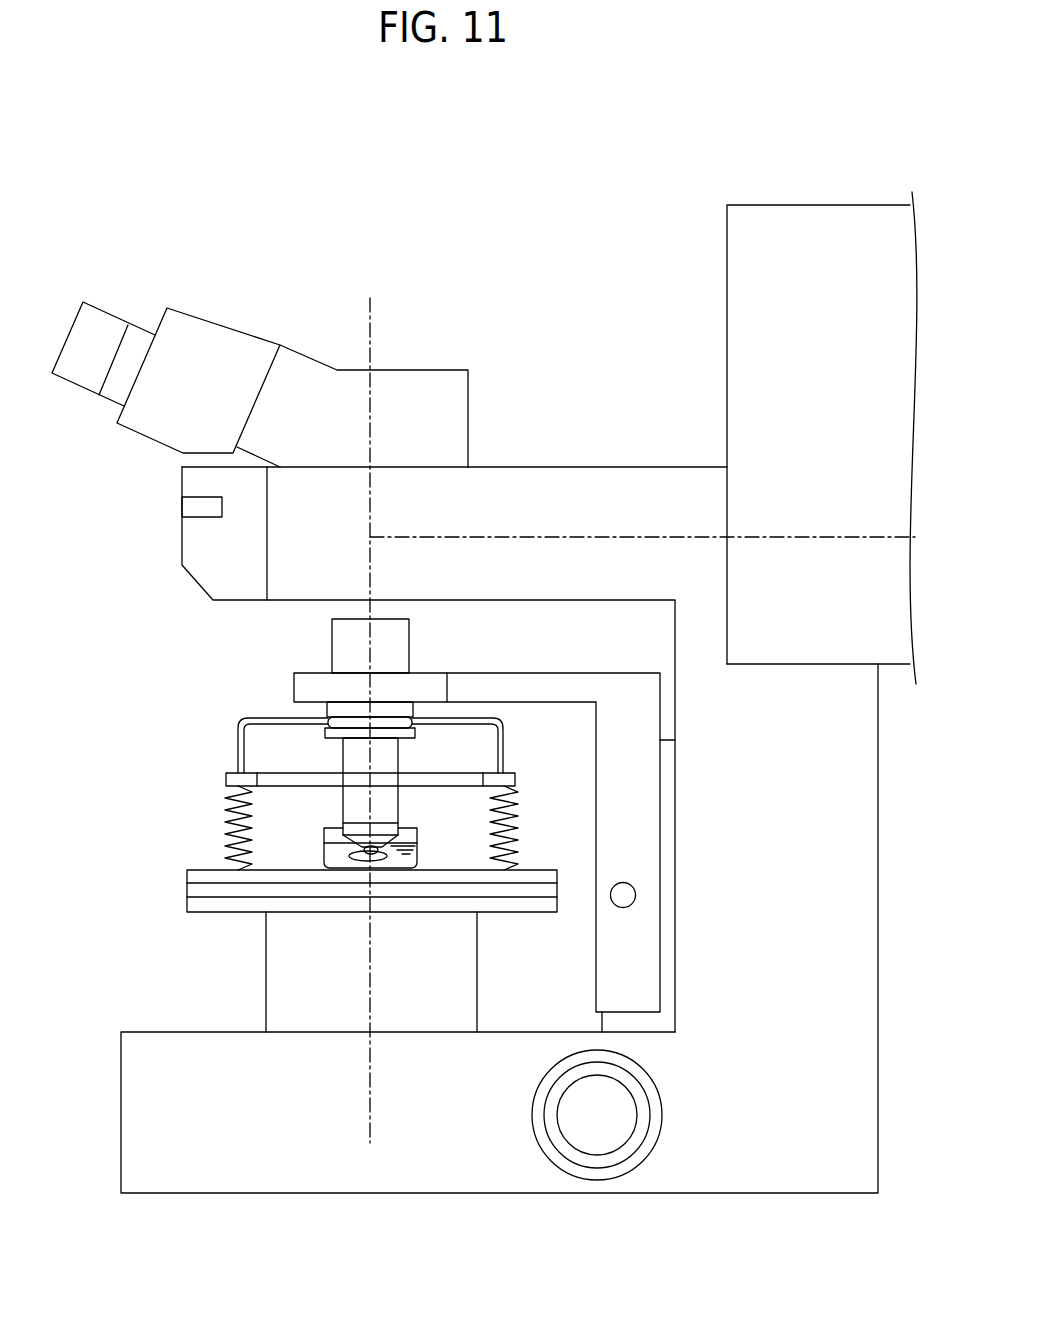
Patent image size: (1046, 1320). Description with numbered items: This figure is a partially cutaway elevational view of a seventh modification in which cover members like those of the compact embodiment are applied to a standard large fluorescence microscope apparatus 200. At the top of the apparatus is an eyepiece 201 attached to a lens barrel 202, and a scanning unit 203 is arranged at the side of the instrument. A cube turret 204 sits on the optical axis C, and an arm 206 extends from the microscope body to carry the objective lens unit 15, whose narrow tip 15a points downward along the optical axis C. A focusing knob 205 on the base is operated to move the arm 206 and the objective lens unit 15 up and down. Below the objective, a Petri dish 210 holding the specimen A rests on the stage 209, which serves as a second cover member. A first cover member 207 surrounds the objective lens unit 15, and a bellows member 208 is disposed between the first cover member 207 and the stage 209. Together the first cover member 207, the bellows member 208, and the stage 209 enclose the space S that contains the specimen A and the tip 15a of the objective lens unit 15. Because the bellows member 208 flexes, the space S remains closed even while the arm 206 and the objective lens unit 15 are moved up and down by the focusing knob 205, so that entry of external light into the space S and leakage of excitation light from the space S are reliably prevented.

The fluorescence microscope apparatus 200 is at (318, 256).
The eyepiece 201 is at (107, 323).
The lens barrel 202 is at (303, 363).
The scanning unit 203 is at (727, 296).
The cube turret 204 is at (200, 575).
The focusing knob 205 is at (664, 1093).
The arm 206 is at (492, 682).
The first cover member 207 is at (238, 752).
The bellows member 208 is at (228, 817).
The stage 209 is at (190, 880).
The Petri dish 210 is at (418, 857).
The objective lens unit 15 is at (353, 761).
The tip of the objective lens unit 15a is at (375, 858).
The specimen A is at (360, 860).
The optical axis C is at (373, 803).
The space S is at (475, 747).